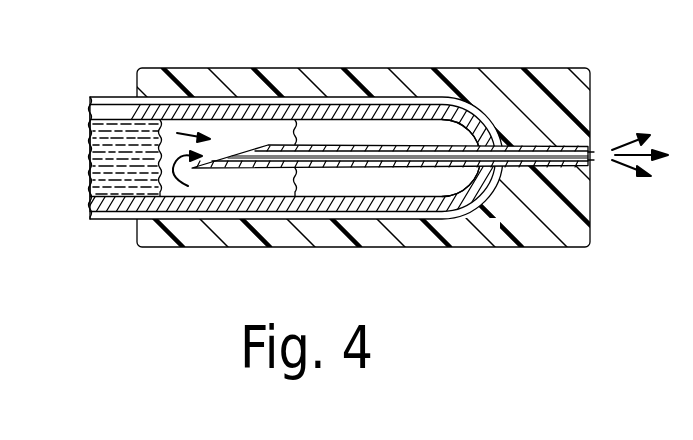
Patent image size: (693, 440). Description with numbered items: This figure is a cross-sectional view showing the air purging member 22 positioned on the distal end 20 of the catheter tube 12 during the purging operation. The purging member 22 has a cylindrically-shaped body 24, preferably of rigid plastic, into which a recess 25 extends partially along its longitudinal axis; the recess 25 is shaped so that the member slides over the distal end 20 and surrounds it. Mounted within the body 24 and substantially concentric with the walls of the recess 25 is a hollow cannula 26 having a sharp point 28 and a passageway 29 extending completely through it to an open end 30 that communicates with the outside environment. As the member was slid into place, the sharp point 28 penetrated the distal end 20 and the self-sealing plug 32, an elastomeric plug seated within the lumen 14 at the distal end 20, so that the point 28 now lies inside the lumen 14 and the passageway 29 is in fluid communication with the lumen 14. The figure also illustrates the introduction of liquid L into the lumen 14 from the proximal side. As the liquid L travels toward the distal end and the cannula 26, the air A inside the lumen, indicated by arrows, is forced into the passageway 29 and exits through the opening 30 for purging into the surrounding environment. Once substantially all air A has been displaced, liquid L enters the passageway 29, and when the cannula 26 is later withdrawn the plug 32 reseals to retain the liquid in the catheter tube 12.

The catheter tube 12 is at (107, 99).
The lumen 14 is at (247, 133).
The distal end 20 is at (480, 176).
The air purging member 22 is at (365, 67).
The cylindrically-shaped body 24 is at (550, 78).
The recess 25 is at (140, 221).
The hollow cannula 26 is at (313, 168).
The sharp point 28 is at (200, 165).
The passageway 29 is at (407, 163).
The open end 30 is at (593, 157).
The self-sealing plug 32 is at (418, 133).
The air A is at (196, 131).
The liquid L is at (86, 184).